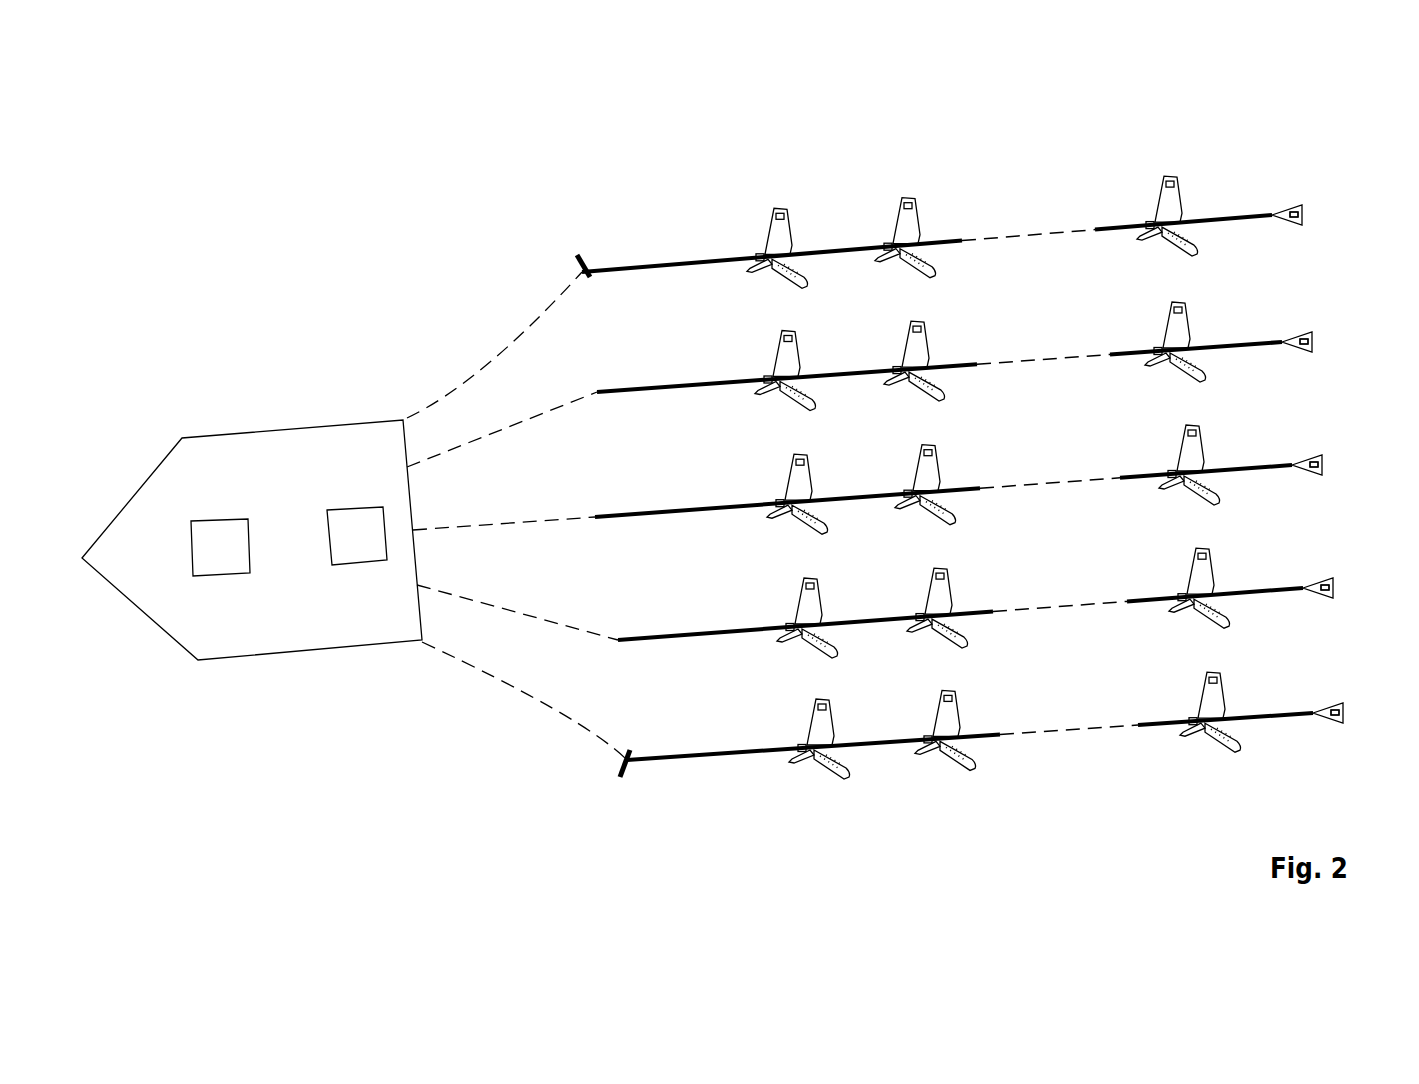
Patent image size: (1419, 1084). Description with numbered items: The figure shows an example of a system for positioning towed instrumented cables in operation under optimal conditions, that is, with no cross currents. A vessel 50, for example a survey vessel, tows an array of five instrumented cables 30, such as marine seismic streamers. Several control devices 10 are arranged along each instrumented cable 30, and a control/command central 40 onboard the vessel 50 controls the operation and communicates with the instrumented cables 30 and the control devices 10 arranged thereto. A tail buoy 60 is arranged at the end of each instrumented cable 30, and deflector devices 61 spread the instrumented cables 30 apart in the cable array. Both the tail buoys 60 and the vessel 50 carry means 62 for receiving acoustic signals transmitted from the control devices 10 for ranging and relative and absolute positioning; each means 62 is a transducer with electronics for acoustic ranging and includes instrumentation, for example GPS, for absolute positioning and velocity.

The control device 10 is at (762, 228).
The instrumented cable 30 is at (640, 267).
The control/command central 40 is at (213, 543).
The vessel 50 is at (193, 420).
The tail buoy 60 is at (1298, 197).
The deflector device 61 is at (577, 255).
The means to receive acoustic signals 62 is at (357, 522).